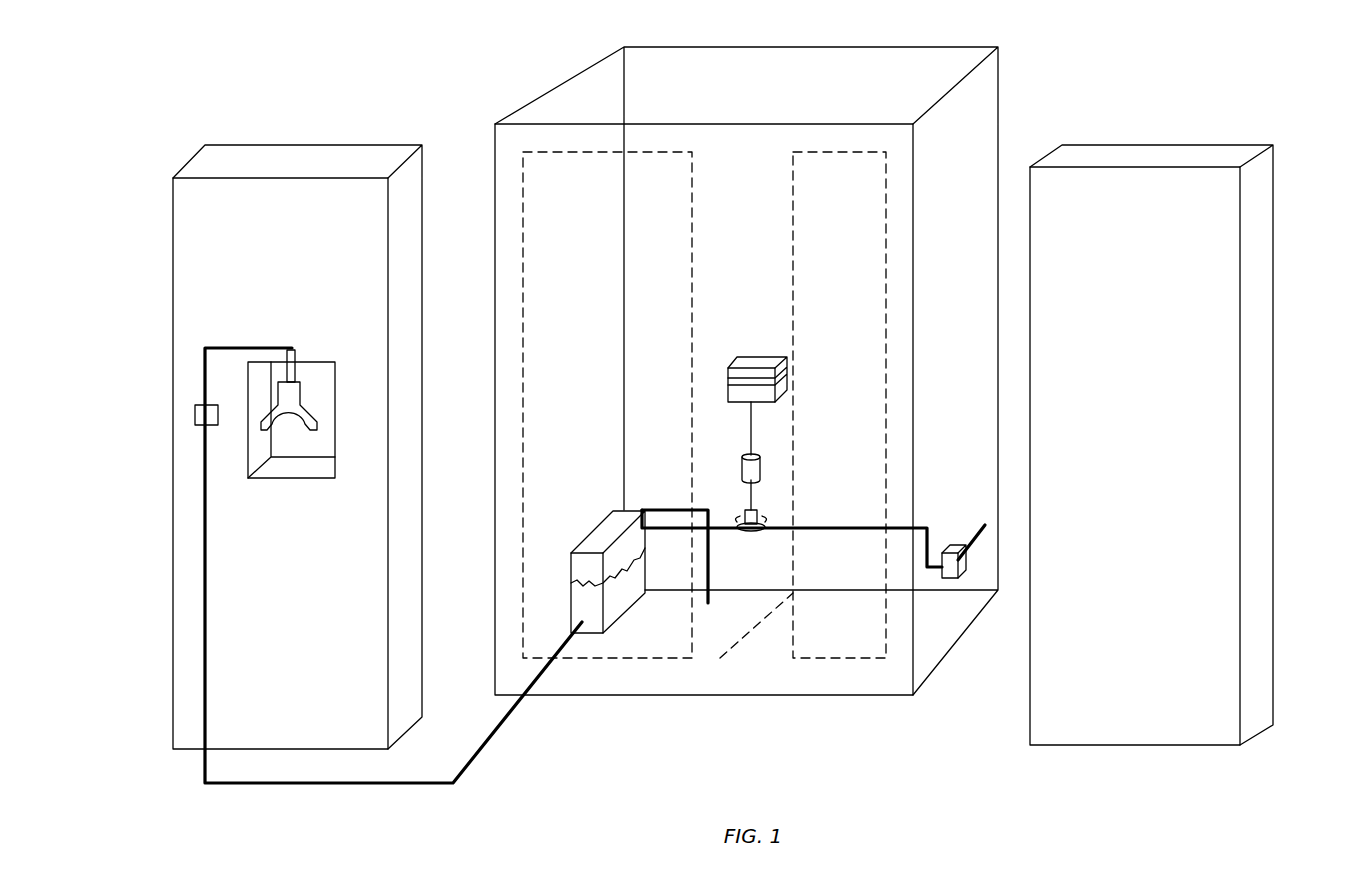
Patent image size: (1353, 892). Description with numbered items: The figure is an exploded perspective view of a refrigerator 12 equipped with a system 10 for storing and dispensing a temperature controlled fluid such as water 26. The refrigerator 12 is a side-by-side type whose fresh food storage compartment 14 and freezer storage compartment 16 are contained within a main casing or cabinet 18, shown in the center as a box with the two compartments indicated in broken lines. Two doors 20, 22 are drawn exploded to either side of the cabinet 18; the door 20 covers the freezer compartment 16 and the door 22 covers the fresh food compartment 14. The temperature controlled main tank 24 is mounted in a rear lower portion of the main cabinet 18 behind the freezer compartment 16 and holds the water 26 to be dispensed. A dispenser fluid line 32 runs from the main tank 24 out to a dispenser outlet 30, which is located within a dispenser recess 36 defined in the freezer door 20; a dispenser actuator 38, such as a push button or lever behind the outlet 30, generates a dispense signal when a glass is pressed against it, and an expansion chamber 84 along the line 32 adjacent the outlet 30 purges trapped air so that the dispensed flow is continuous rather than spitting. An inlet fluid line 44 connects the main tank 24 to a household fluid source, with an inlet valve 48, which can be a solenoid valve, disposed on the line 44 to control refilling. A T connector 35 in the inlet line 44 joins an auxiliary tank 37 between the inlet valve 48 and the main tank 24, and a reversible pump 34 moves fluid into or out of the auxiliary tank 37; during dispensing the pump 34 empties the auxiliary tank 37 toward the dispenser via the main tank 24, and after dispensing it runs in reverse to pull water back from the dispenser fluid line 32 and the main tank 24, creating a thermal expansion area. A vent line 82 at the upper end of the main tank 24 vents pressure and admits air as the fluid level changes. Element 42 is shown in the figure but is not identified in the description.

The system 10 is at (568, 740).
The refrigerator 12 is at (825, 665).
The fresh food storage compartment 14 is at (845, 230).
The freezer storage compartment 16 is at (647, 173).
The main refrigerator portion or casing 18 is at (982, 112).
The door 20 is at (317, 732).
The door 22 is at (1105, 722).
The temperature controlled main tank 24 is at (598, 542).
The water 26 is at (612, 602).
The dispenser outlet 30 is at (292, 373).
The dispenser fluid line 32 is at (205, 645).
The reversible pump 34 is at (761, 465).
The T connector 35 is at (742, 533).
The dispenser recess 36 is at (335, 438).
The auxiliary tank 37 is at (788, 362).
The dispenser actuator 38 is at (300, 413).
The wire 42 is at (632, 556).
The inlet fluid line 44 is at (900, 520).
The inlet valve 48 is at (947, 578).
The vent line 82 is at (708, 557).
The expansion chamber 84 is at (195, 416).